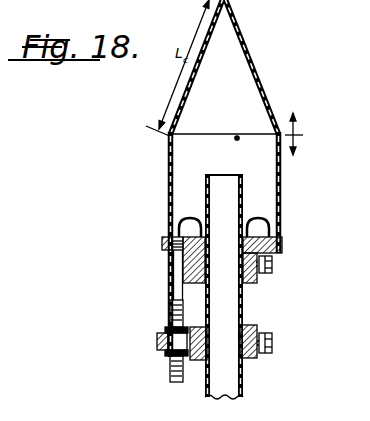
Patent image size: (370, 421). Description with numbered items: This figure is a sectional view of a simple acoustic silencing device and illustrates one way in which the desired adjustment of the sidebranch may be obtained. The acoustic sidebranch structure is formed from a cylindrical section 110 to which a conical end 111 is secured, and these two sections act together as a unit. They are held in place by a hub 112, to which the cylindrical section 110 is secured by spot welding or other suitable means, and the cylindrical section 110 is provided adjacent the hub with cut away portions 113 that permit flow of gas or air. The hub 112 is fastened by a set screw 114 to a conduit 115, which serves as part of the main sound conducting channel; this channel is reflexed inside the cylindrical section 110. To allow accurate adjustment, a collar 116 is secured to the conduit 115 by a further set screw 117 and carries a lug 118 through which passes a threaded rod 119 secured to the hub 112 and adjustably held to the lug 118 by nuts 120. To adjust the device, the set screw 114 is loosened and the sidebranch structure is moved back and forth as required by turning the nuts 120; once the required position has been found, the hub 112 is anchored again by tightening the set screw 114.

The cylindrical section 110 is at (168, 183).
The conical end 111 is at (258, 70).
The hub 112 is at (282, 250).
The cut away portions 113 is at (258, 227).
The set screw 114 is at (272, 266).
The conduit 115 is at (244, 378).
The collar 116 is at (258, 326).
The set screw 117 is at (273, 347).
The lug 118 is at (157, 338).
The threaded rod 119 is at (176, 277).
The nuts 120 is at (168, 331).